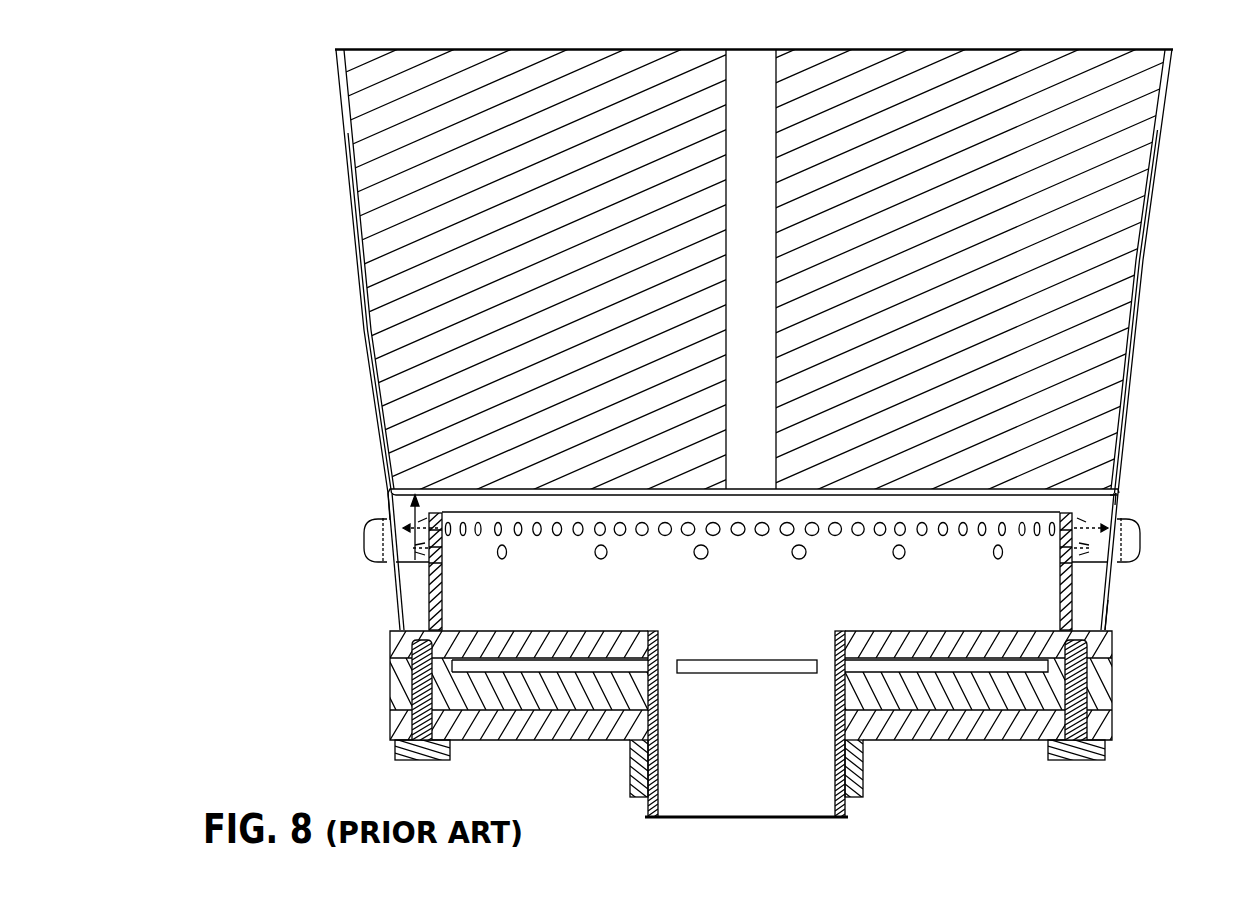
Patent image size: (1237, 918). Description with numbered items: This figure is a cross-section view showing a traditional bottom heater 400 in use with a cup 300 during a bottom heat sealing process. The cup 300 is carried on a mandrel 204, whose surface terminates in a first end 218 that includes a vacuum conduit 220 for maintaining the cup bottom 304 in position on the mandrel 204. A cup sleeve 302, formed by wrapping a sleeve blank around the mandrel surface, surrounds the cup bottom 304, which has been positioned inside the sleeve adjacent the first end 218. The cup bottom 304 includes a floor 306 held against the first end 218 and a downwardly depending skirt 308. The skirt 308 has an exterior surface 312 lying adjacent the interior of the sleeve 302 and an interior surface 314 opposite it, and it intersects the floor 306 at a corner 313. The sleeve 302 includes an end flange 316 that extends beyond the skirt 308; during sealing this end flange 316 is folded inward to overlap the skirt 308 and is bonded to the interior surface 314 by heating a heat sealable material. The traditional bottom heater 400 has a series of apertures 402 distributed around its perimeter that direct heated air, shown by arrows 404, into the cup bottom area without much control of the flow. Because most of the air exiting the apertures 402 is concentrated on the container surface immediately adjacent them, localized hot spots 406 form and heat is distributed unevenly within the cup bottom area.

The mandrel 204 is at (518, 173).
The vacuum conduit 220 is at (778, 118).
The cup 300 is at (328, 226).
The cup sleeve 302 is at (1150, 253).
The floor 306 is at (528, 495).
The first end 218 is at (418, 489).
The skirt 308 is at (388, 515).
The cup bottom 304 is at (402, 560).
The apertures 402 is at (463, 532).
The arrows 404 is at (420, 558).
The localized hot spots 406 is at (372, 548).
The exterior surface 312 is at (1118, 510).
The corner 313 is at (1118, 500).
The interior surface 314 is at (1119, 505).
The end flange 316 is at (1108, 607).
The traditional bottom heater 400 is at (380, 702).